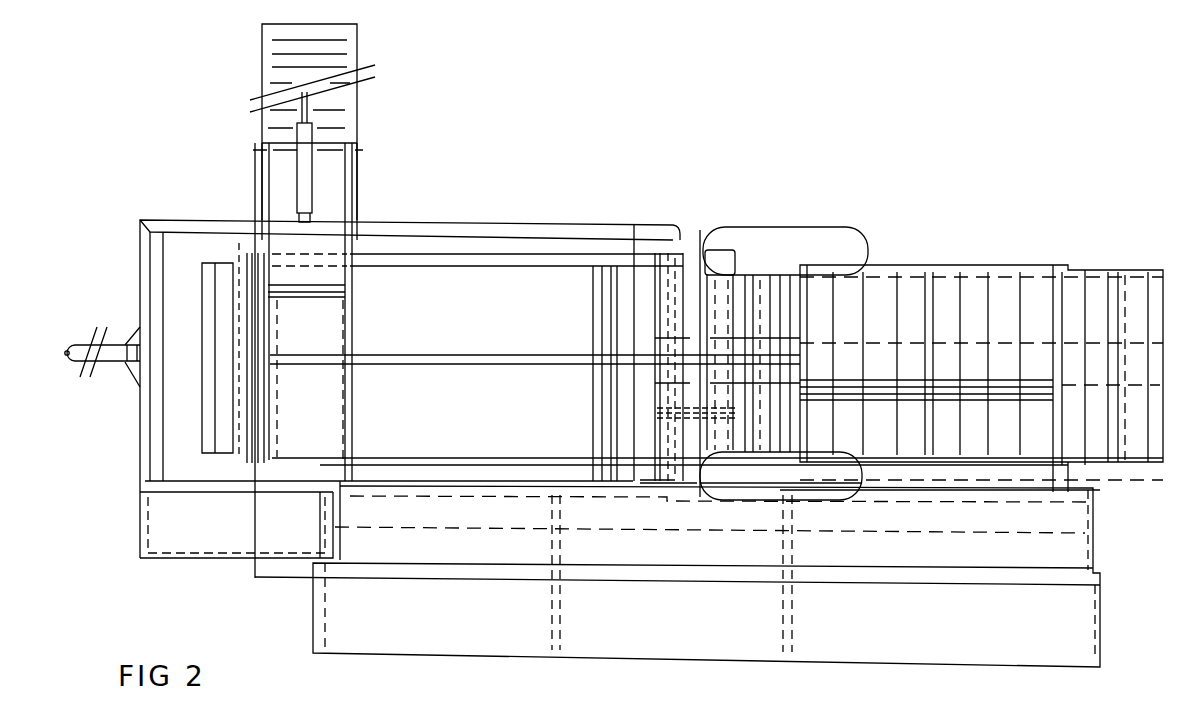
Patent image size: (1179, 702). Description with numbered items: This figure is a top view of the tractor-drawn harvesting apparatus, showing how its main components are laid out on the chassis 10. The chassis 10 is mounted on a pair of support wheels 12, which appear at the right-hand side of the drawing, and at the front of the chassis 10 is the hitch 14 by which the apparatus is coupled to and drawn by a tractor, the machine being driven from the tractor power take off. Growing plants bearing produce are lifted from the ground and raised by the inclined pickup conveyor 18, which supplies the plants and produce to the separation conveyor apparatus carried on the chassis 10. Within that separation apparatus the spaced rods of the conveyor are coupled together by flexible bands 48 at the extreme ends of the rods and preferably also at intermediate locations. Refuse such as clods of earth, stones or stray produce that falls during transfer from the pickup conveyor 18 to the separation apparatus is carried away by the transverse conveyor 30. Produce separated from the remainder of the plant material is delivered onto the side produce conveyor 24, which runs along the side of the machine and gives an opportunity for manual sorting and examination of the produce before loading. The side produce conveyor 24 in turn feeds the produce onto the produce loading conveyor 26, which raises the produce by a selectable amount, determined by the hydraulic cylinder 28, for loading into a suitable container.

The chassis 10 is at (145, 453).
The support wheels 12 is at (808, 235).
The hitch 14 is at (68, 347).
The pickup conveyor 18 is at (610, 268).
The side produce conveyor 24 is at (702, 553).
The produce loading conveyor 26 is at (348, 118).
The hydraulic cylinder 28 is at (305, 185).
The transverse conveyor 30 is at (695, 262).
The flexible bands 48 is at (747, 362).